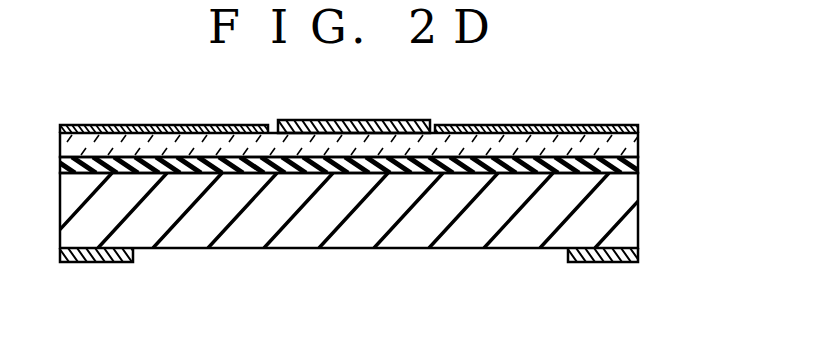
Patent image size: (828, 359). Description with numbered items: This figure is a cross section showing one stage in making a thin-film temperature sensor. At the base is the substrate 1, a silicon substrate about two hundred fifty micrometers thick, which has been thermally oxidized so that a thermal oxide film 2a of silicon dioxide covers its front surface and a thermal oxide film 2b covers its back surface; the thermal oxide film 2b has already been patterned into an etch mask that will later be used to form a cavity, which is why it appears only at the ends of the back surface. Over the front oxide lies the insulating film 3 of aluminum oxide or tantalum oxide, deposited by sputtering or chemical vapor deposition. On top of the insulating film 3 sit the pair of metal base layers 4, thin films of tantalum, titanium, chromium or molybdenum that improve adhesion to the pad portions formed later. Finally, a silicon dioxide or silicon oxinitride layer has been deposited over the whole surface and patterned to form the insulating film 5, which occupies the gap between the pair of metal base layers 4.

The substrate 1 is at (627, 231).
The thermal oxide film 2a is at (636, 167).
The thermal oxide film 2b is at (623, 263).
The insulating film 3 is at (636, 143).
The metal base layers 4 is at (617, 125).
The insulating film 5 is at (410, 121).